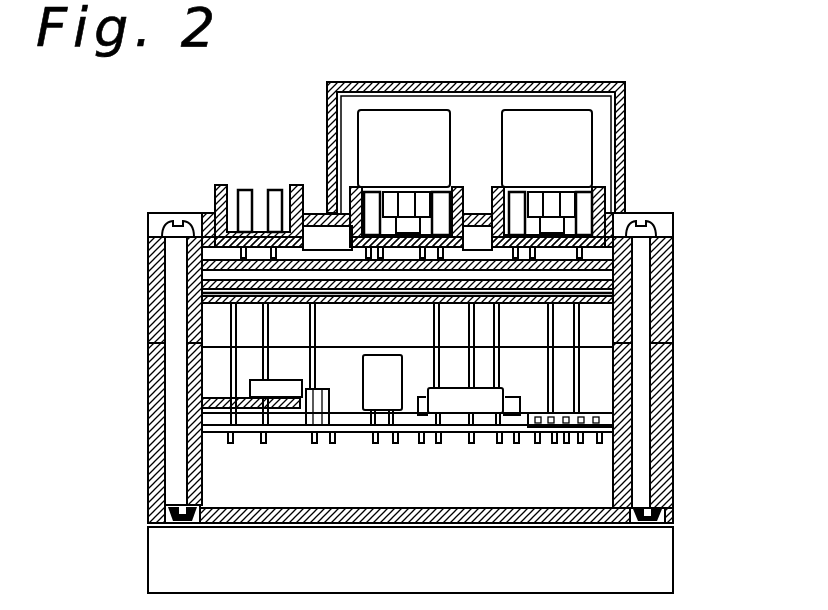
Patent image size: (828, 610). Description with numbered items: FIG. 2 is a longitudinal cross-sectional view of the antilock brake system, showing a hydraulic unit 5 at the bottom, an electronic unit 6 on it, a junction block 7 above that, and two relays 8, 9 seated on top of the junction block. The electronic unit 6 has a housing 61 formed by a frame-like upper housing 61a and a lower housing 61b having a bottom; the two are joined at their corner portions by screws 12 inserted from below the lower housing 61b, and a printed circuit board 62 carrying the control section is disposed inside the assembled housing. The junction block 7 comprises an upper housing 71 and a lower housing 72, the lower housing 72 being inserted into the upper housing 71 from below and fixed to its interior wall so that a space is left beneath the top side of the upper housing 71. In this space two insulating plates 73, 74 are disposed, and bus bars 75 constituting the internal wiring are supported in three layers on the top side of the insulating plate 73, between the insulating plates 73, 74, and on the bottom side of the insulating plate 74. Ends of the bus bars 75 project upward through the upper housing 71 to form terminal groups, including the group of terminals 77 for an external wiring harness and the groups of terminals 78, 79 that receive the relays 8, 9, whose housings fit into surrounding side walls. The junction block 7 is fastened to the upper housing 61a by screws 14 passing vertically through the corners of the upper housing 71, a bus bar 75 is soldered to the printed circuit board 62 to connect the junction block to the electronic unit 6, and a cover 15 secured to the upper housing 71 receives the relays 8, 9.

The hydraulic unit 5 is at (677, 550).
The electronic unit 6 is at (735, 350).
The junction block 7 is at (735, 215).
The relay 8 is at (410, 110).
The relay 9 is at (535, 110).
The screw 12 is at (177, 488).
The screw 14 is at (177, 364).
The cover 15 is at (625, 85).
The housing 61 is at (62, 387).
The upper housing 61a is at (168, 382).
The lower housing 61b is at (152, 460).
The printed circuit board 62 is at (457, 440).
The upper housing 71 is at (202, 299).
The lower housing 72 is at (200, 294).
The insulating plate 73 is at (202, 265).
The insulating plate 74 is at (202, 284).
The bus bar 75 is at (275, 197).
The group of terminals 77 is at (230, 186).
The group of terminals 78 is at (369, 195).
The group of terminals 79 is at (586, 209).